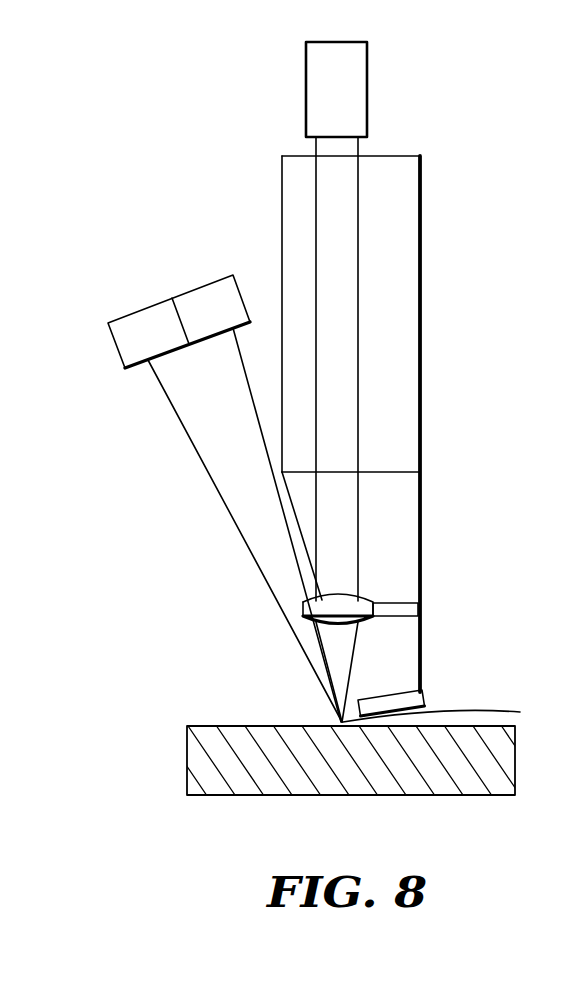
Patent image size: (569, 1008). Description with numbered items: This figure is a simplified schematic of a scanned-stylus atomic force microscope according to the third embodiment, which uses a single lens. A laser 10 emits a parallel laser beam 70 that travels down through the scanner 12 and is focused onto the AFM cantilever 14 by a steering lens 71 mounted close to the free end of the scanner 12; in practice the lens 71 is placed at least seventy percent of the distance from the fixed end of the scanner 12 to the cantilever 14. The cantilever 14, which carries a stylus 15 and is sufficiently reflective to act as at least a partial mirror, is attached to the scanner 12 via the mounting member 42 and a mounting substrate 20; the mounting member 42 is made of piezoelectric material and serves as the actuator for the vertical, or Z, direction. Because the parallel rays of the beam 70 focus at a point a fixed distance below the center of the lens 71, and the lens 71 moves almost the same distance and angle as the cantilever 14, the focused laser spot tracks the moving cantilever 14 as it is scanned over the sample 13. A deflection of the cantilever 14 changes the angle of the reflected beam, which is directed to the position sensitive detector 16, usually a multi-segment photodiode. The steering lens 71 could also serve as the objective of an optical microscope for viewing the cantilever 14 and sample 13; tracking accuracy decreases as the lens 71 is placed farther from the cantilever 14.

The laser 10 is at (307, 93).
The scanner 12 is at (421, 197).
The sample 13 is at (186, 758).
The AFM cantilever 14 is at (445, 719).
The stylus 15 is at (338, 721).
The position sensitive detector 16 is at (178, 297).
The mounting substrate 20 is at (425, 692).
The mounting member 42 is at (421, 480).
The parallel laser beam 70 is at (359, 305).
The steering lens 71 is at (378, 602).